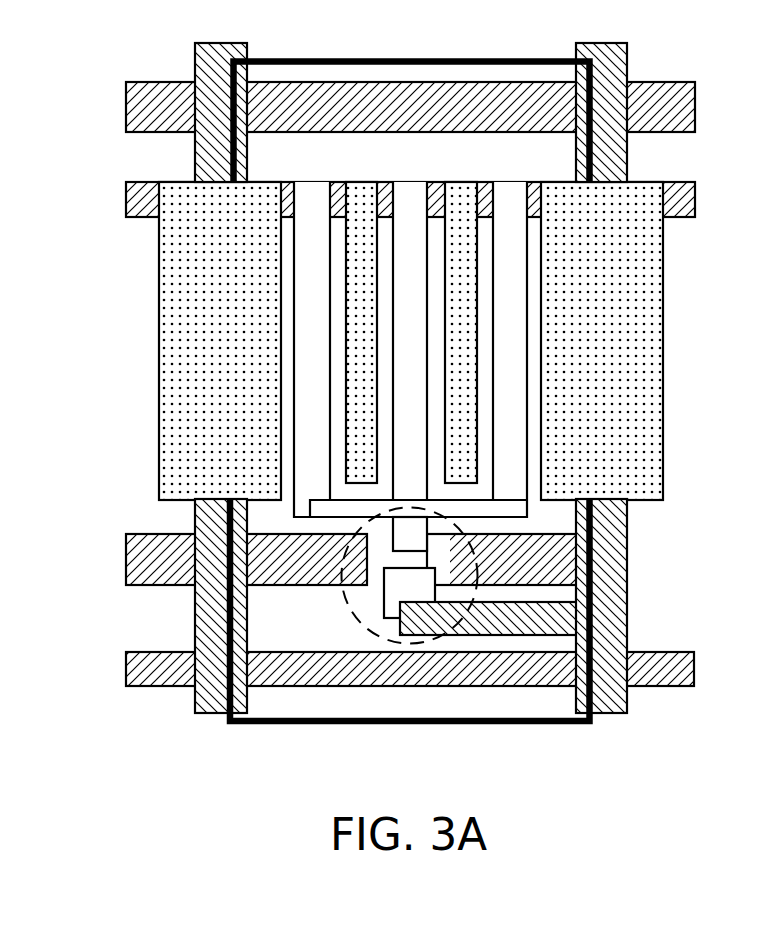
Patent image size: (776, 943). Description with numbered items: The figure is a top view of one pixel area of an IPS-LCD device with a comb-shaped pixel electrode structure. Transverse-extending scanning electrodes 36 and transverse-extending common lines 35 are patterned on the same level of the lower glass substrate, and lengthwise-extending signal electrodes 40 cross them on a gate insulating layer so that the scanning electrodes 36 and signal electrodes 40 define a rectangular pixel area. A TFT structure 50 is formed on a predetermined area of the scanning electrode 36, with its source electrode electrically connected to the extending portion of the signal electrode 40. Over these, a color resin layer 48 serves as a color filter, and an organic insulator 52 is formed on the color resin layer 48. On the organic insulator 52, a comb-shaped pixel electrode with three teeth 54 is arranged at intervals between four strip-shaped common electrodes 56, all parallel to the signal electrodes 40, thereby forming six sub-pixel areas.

The common line 35 is at (685, 200).
The scanning electrode 36 is at (687, 108).
The signal electrode 40 is at (225, 44).
The color resin layer 48 is at (474, 726).
The TFT structure 50 is at (362, 630).
The organic insulator 52 is at (410, 660).
The pixel electrode 54 is at (308, 190).
The common electrode 56 is at (172, 330).